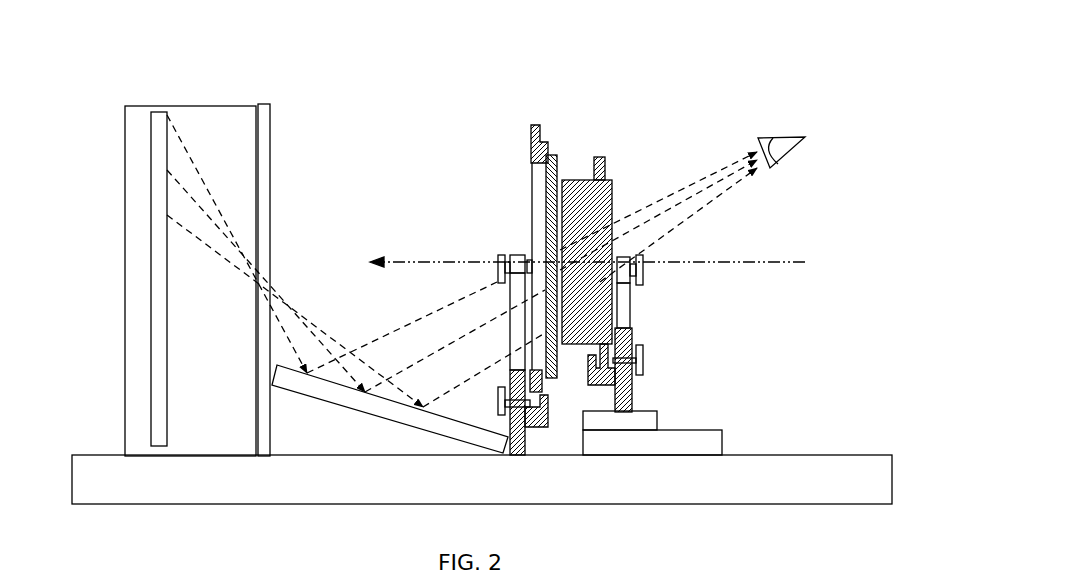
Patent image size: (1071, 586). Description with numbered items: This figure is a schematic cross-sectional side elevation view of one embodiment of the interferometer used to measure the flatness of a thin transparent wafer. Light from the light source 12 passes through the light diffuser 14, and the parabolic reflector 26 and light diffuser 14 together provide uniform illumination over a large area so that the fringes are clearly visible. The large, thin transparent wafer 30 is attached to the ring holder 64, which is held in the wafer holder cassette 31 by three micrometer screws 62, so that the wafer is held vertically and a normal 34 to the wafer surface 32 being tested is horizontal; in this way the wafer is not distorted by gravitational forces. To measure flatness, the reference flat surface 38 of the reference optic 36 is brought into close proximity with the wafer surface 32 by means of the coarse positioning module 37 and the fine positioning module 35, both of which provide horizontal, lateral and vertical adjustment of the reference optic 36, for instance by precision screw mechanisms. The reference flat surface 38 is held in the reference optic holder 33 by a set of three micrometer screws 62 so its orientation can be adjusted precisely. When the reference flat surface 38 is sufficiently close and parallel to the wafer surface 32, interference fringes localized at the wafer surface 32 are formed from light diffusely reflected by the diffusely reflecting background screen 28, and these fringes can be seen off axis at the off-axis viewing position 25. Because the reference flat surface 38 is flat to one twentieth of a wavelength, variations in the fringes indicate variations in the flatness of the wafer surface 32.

The light source 12 is at (200, 232).
The light diffuser 14 is at (319, 257).
The off-axis viewing position 25 is at (820, 92).
The parabolic reflector 26 is at (140, 281).
The diffusely reflecting background screen 28 is at (382, 455).
The large, thin transparent wafer 30 is at (502, 260).
The wafer holder cassette 31 is at (569, 459).
The wafer surface 32 is at (488, 266).
The reference optic holder 33 is at (693, 438).
The normal 34 is at (564, 245).
The fine positioning module 35 is at (677, 401).
The reference optic 36 is at (655, 222).
The coarse positioning module 37 is at (713, 425).
The reference flat surface 38 is at (697, 291).
The micrometer screws 62 is at (689, 351).
The ring holder 64 is at (476, 122).